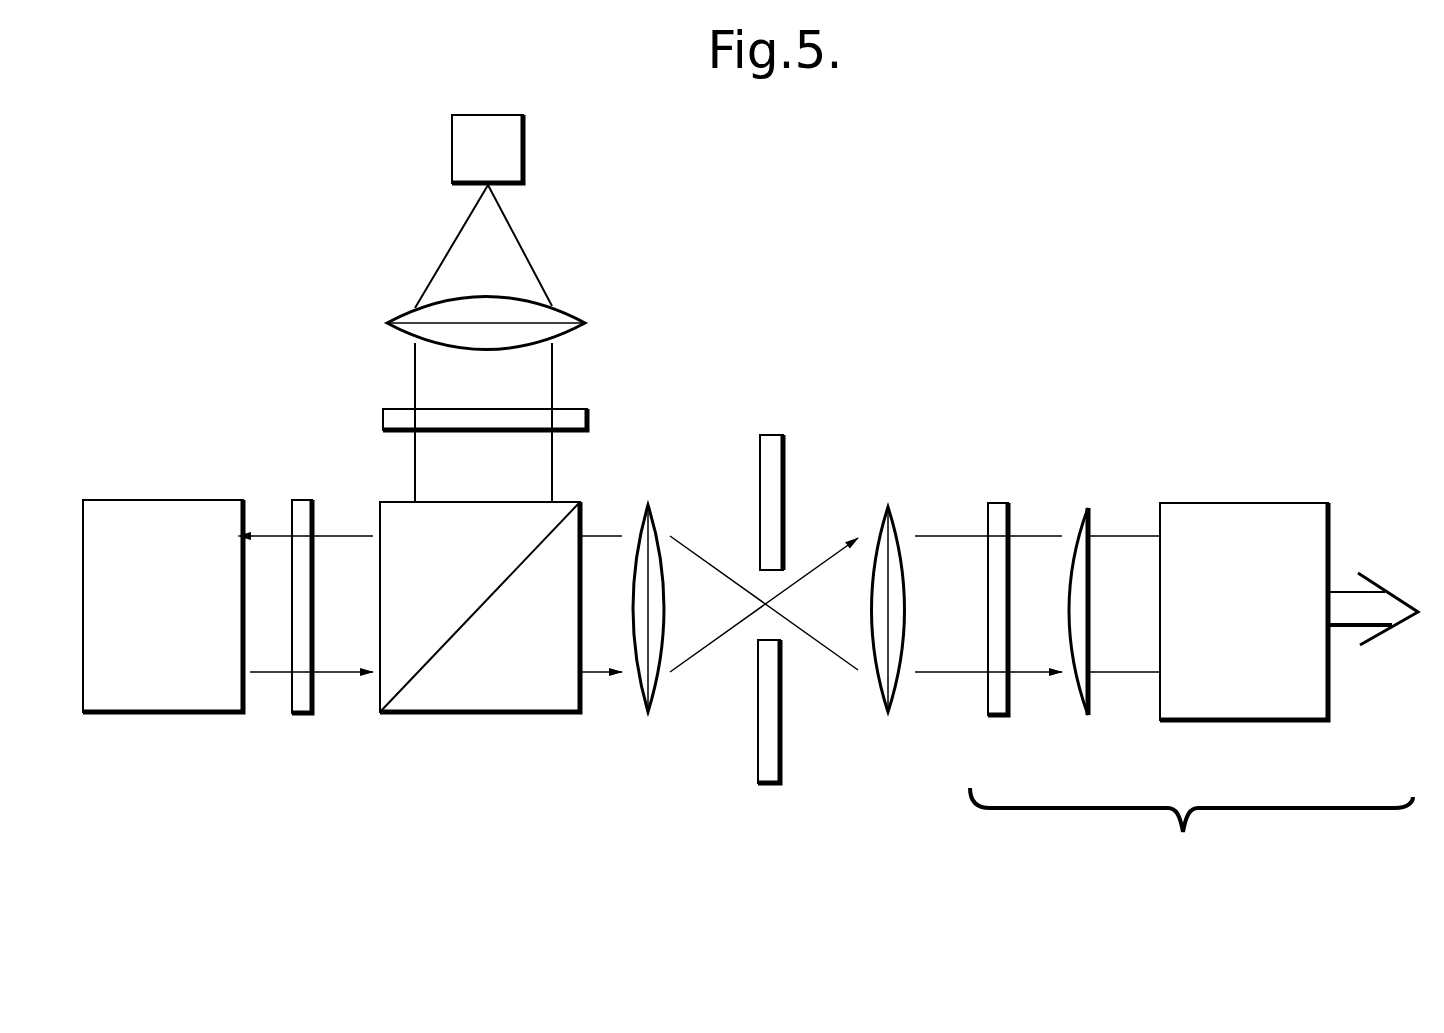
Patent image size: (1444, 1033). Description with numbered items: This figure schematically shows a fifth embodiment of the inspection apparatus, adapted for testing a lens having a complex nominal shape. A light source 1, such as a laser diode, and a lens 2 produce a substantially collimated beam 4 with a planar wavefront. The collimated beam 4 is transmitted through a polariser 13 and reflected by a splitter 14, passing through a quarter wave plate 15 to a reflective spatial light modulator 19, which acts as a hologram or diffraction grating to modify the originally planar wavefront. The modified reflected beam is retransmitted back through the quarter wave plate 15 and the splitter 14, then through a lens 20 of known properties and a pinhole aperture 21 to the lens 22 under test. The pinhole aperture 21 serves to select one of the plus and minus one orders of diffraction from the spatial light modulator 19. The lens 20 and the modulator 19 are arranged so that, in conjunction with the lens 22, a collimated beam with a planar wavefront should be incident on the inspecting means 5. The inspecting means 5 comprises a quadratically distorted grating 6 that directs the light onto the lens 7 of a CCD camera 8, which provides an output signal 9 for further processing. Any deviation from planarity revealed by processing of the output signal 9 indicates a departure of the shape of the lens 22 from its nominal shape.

The light source 1 is at (497, 155).
The lens 2 is at (563, 314).
The collimated beam 4 is at (468, 398).
The polariser 13 is at (587, 420).
The reflective spatial light modulator 19 is at (163, 606).
The quarter wave plate 15 is at (301, 713).
The splitter 14 is at (487, 685).
The lens 20 is at (650, 505).
The pinhole aperture 21 is at (766, 746).
The lens under test 22 is at (875, 690).
The quadratically distorted grating 6 is at (995, 503).
The lens 7 is at (1075, 520).
The CCD camera 8 is at (1228, 632).
The output signal 9 is at (1345, 613).
The inspecting means 5 is at (1191, 832).